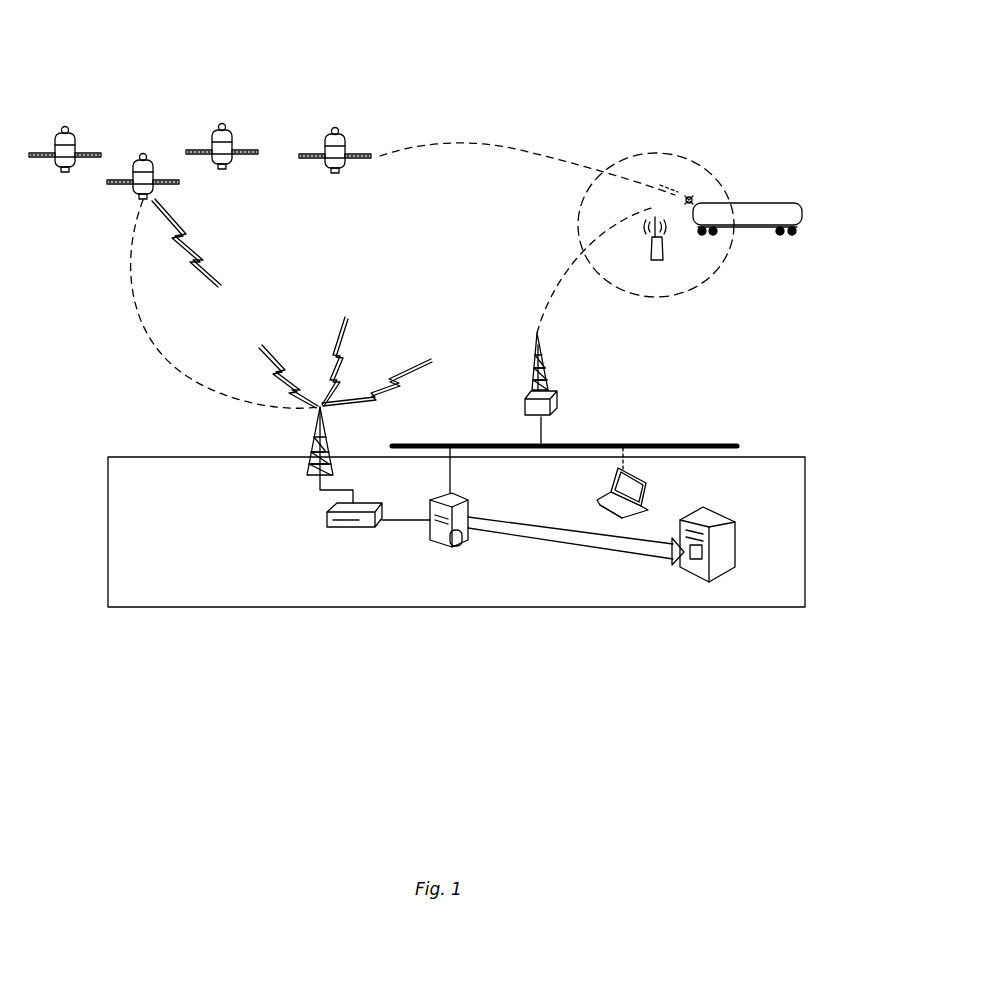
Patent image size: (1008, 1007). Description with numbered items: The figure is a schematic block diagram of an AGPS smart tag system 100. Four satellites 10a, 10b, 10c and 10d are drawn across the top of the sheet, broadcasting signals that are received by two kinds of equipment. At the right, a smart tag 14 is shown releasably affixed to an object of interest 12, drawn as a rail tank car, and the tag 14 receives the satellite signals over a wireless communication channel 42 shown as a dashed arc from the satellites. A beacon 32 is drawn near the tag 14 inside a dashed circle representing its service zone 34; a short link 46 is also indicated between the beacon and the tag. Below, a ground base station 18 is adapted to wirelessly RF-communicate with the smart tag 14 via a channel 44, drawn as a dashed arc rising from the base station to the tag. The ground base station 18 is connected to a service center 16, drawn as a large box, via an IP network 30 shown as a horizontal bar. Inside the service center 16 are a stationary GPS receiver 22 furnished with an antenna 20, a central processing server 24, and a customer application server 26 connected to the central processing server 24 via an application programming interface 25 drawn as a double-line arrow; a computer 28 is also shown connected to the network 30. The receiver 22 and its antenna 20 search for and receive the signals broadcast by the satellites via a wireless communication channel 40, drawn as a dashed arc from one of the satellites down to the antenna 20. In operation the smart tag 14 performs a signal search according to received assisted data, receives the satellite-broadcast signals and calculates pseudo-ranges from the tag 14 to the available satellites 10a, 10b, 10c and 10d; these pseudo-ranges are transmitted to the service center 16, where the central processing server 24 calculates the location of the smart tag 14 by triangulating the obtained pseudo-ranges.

The AGPS smart tag system 100 is at (807, 108).
The satellite 10a is at (75, 137).
The satellite 10b is at (152, 152).
The satellite 10c is at (226, 130).
The satellite 10d is at (340, 132).
The object of interest 12 is at (783, 213).
The smart tag 14 is at (692, 201).
The service center 16 is at (193, 457).
The ground base station 18 is at (548, 385).
The antenna 20 is at (327, 452).
The stationary GPS receiver 22 is at (347, 528).
The central processing server 24 is at (440, 547).
The application programming interface 25 is at (580, 542).
The customer application server 26 is at (720, 567).
The user computer 28 is at (650, 488).
The IP network 30 is at (603, 446).
The beacon 32 is at (660, 260).
The service zone 34 is at (660, 152).
The wireless communication channel 40 is at (128, 278).
The wireless communication channel 42 is at (500, 143).
The channel 44 is at (600, 240).
The short range wireless link 46 is at (670, 178).